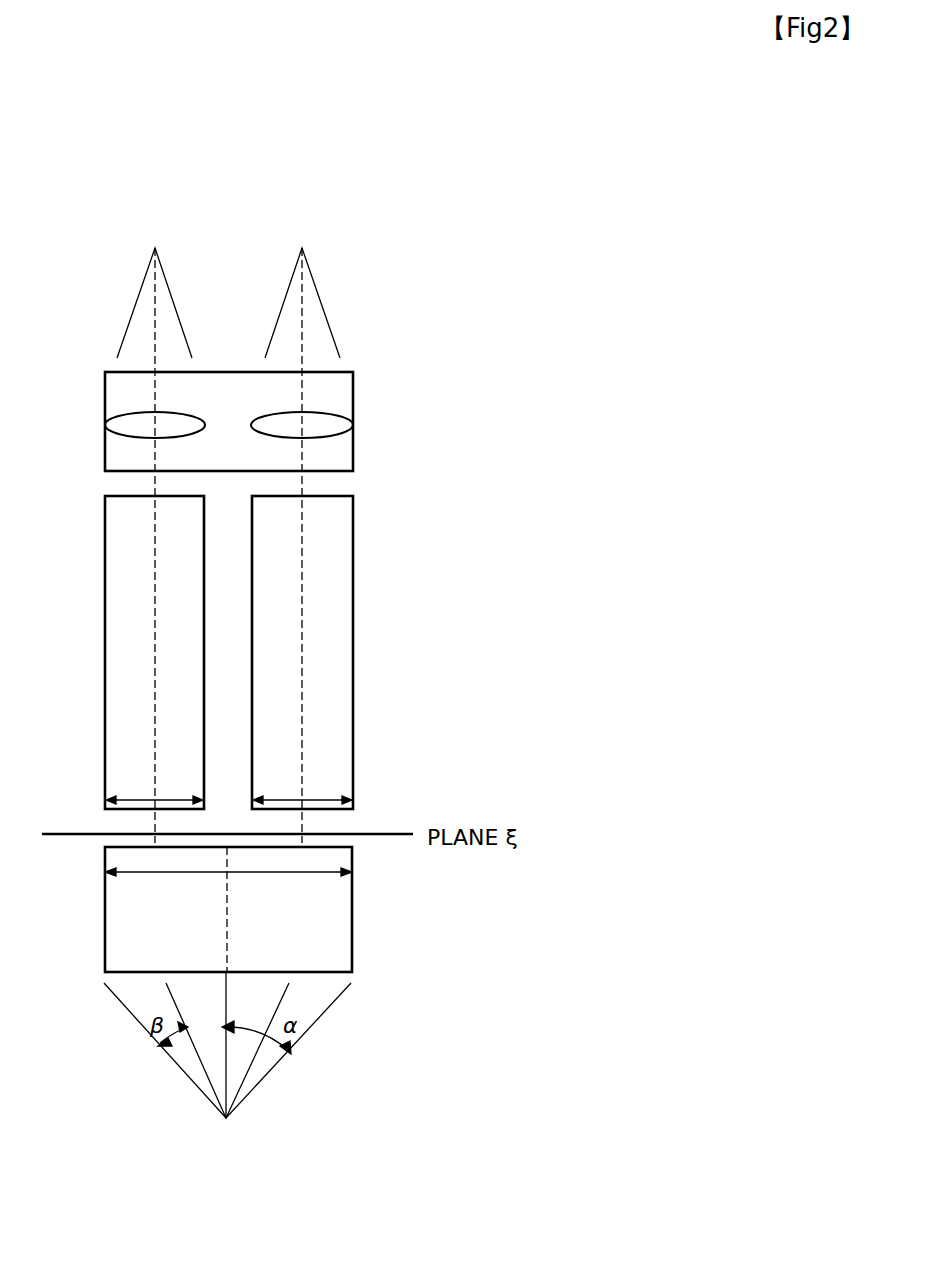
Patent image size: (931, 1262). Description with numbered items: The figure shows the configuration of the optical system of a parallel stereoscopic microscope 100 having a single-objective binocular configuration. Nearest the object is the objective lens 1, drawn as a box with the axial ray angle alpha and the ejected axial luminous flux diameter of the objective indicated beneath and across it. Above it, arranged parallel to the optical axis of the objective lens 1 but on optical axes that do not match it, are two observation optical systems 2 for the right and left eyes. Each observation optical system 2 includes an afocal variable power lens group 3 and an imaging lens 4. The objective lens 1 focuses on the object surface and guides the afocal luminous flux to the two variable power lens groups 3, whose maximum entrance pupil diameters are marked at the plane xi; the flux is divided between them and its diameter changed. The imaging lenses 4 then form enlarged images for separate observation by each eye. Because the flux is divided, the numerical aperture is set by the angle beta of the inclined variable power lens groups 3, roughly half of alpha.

The parallel stereoscopic microscope 100 is at (398, 270).
The observation optical system 2 is at (292, 590).
The imaging lens 4 is at (345, 425).
The afocal variable power lens group 3 is at (268, 652).
The objective lens 1 is at (345, 910).